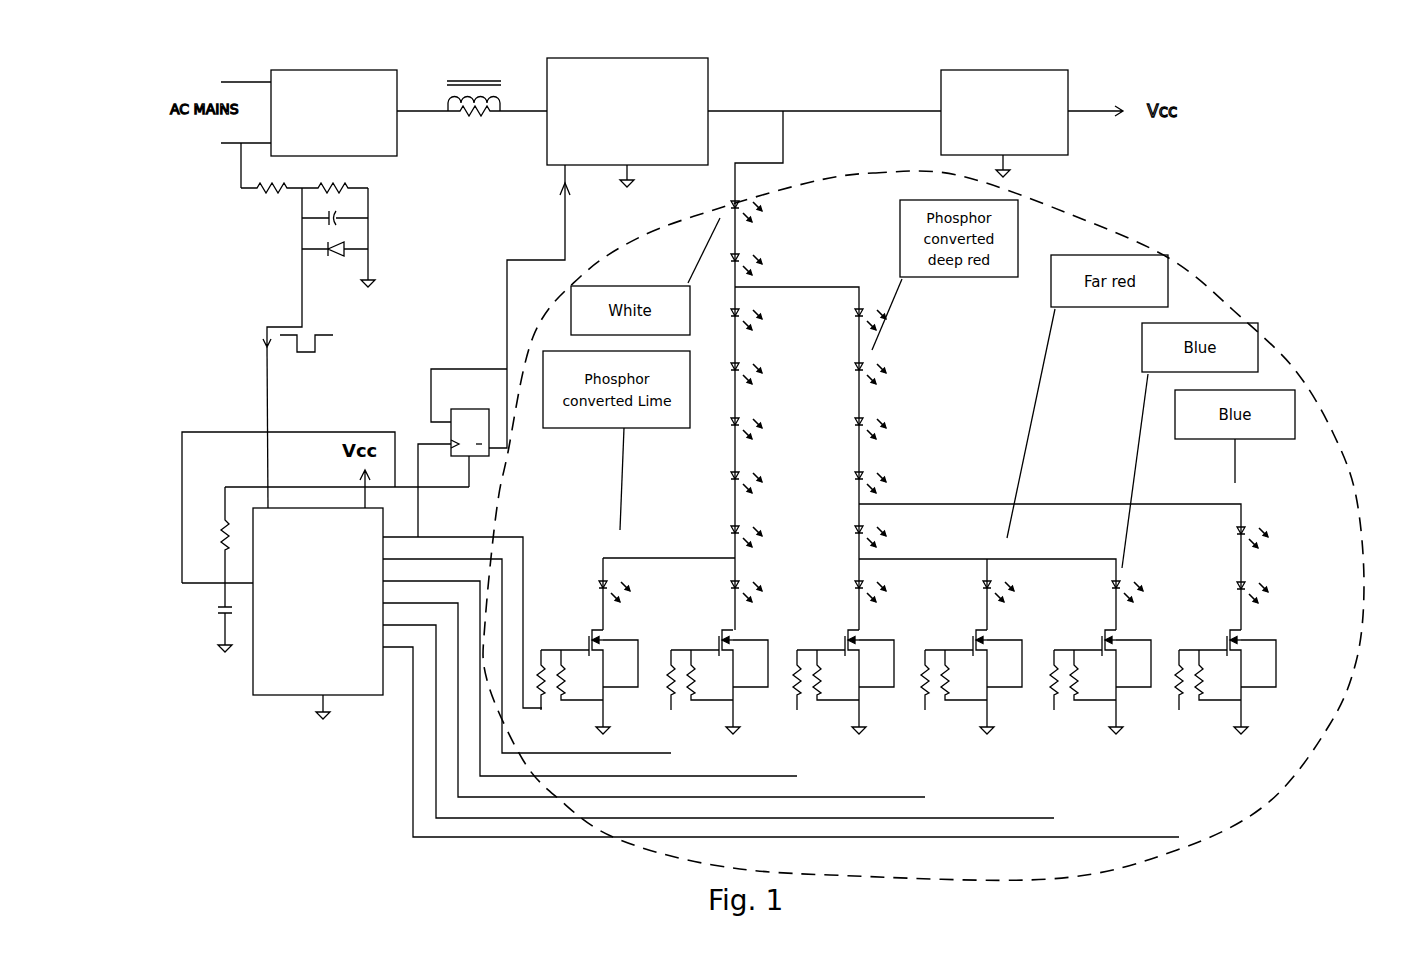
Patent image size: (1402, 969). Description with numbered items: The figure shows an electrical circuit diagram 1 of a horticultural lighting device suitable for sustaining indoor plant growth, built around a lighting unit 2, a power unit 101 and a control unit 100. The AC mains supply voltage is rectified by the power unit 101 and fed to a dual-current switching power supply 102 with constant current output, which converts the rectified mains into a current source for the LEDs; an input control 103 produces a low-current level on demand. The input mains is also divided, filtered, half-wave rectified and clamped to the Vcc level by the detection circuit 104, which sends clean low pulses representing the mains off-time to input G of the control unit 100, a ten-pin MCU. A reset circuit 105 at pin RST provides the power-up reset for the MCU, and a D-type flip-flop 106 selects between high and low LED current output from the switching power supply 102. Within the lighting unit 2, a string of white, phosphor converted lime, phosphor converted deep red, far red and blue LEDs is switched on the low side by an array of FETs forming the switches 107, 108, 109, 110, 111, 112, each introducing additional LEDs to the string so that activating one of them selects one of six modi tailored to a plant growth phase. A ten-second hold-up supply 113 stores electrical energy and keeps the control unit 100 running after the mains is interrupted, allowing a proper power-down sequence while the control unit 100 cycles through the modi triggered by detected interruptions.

The electrical circuit diagram 1 is at (1200, 151).
The lighting unit 2 is at (1190, 267).
The control unit 100 is at (318, 601).
The power unit 101 is at (334, 113).
The dual-current switching power supply 102 is at (627, 111).
The input control 103 is at (529, 306).
The detection circuit 104 is at (308, 256).
The reset circuit 105 is at (203, 569).
The D-type flip-flop 106 is at (465, 453).
The switch 107 is at (585, 680).
The switch 108 is at (716, 680).
The switch 109 is at (840, 680).
The switch 110 is at (970, 680).
The switch 111 is at (1097, 680).
The switch 112 is at (1224, 680).
The hold-up supply 113 is at (1004, 112).